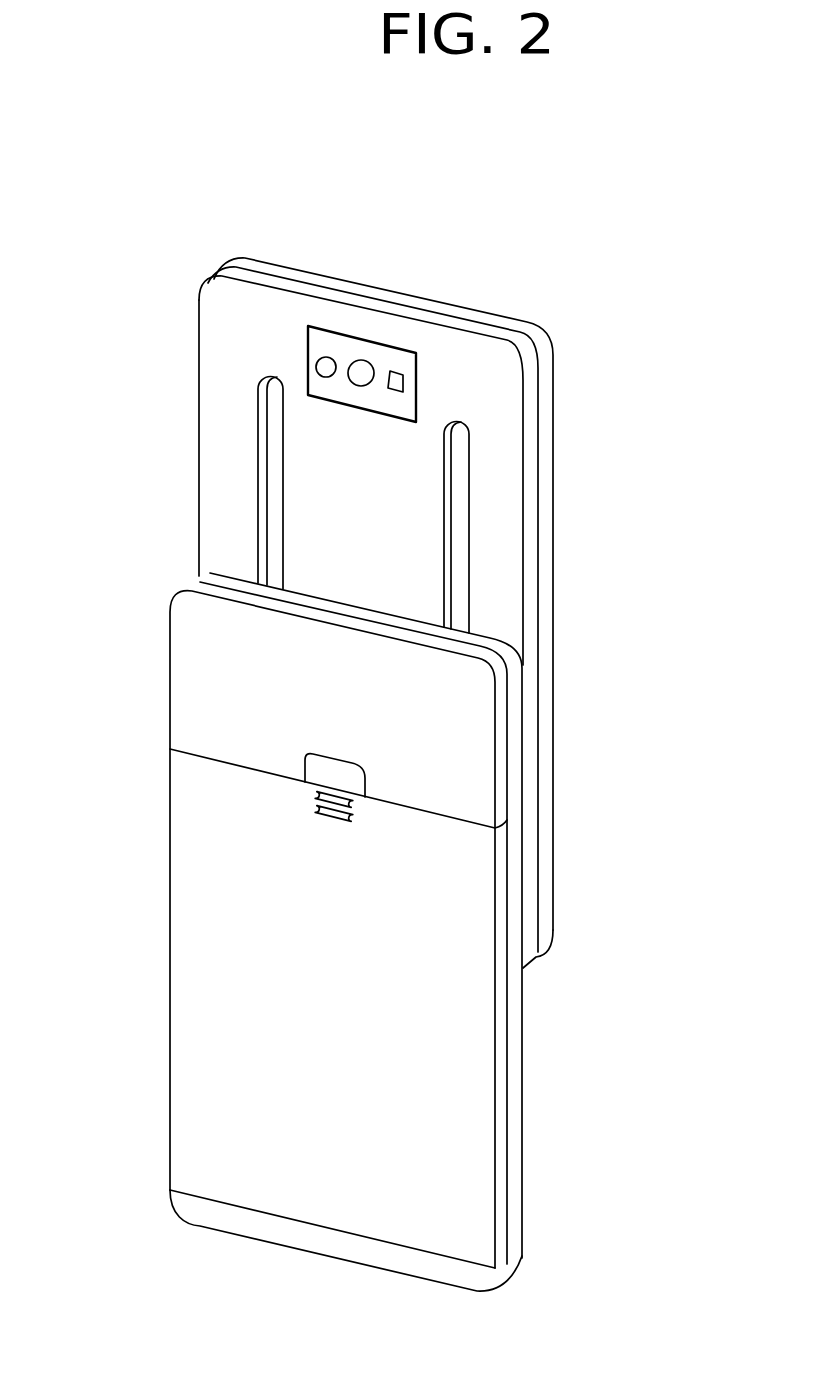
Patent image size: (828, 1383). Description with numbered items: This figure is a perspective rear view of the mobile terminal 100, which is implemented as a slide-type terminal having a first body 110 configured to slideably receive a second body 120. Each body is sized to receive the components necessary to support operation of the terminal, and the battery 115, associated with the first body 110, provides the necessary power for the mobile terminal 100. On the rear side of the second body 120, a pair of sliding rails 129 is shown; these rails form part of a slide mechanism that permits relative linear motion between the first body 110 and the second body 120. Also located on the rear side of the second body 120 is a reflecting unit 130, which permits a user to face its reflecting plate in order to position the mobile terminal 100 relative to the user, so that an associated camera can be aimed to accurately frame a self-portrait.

The mobile terminal 100 is at (227, 170).
The first body 110 is at (551, 1029).
The battery 115 is at (372, 1228).
The second body 120 is at (566, 579).
The sliding rails 129 is at (270, 475).
The reflecting unit 130 is at (323, 313).